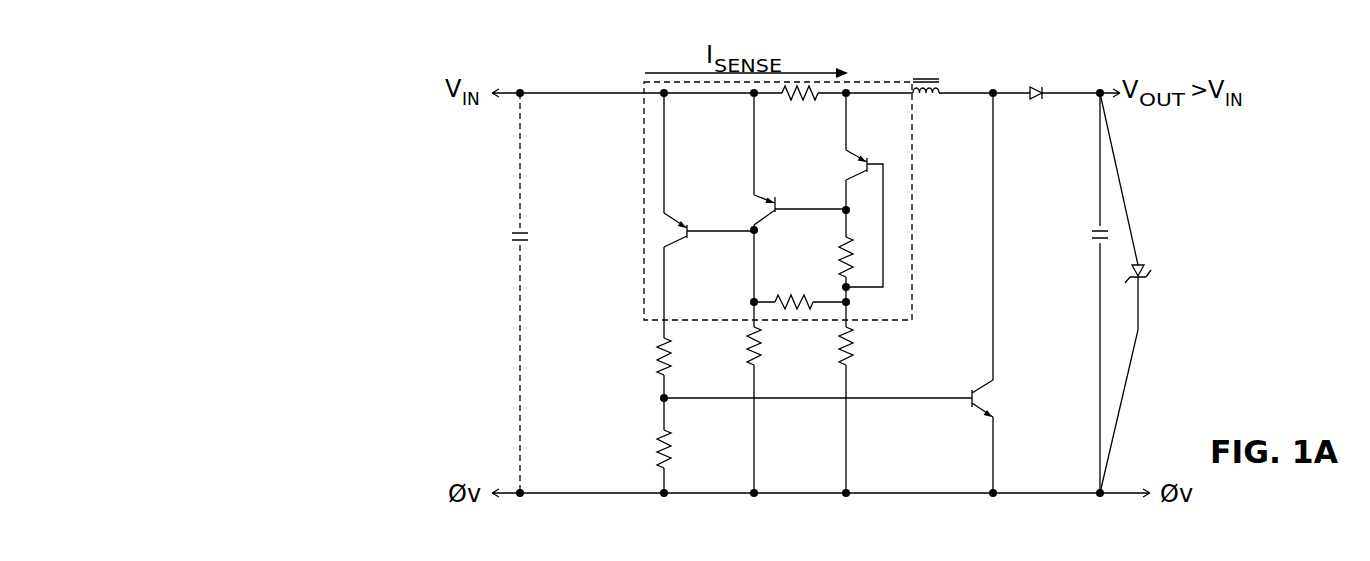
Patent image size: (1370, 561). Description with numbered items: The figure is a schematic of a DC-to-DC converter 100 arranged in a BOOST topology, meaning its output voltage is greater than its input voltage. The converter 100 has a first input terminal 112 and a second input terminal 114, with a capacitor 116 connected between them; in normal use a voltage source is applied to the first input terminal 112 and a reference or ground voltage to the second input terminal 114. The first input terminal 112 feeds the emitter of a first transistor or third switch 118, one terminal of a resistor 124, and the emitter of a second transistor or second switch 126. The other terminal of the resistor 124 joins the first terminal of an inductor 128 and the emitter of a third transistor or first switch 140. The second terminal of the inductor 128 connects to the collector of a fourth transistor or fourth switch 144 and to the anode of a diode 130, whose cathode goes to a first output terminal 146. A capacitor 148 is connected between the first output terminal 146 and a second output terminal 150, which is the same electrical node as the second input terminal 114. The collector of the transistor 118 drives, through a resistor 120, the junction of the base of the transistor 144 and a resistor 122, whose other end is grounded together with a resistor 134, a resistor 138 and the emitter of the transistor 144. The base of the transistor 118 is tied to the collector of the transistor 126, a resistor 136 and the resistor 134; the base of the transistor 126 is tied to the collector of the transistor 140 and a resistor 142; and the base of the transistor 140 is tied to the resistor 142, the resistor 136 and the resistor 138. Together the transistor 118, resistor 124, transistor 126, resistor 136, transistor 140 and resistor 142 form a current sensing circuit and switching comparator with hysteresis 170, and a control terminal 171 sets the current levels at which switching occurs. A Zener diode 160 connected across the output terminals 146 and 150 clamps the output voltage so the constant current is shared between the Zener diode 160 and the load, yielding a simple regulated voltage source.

The DC-to-DC converter 100 is at (372, 64).
The first input terminal 112 is at (492, 88).
The second input terminal 114 is at (507, 490).
The capacitor 116 is at (515, 233).
The first transistor or third switch 118 is at (690, 222).
The resistor 120 is at (658, 355).
The resistor 122 is at (658, 445).
The resistor 124 is at (808, 100).
The second transistor or second switch 126 is at (775, 199).
The inductor 128 is at (928, 100).
The diode 130 is at (1036, 100).
The resistor 134 is at (749, 352).
The resistor 136 is at (794, 296).
The resistor 138 is at (842, 352).
The third transistor or first switch 140 is at (866, 157).
The resistor 142 is at (841, 251).
The fourth transistor or fourth switch 144 is at (968, 395).
The first output terminal 146 is at (1107, 100).
The capacitor 148 is at (1098, 243).
The second output terminal 150 is at (1124, 490).
The Zener diode 160 is at (1142, 280).
The current sensing circuit and switching comparator with hysteresis 170 is at (912, 204).
The control terminal 171 is at (850, 303).